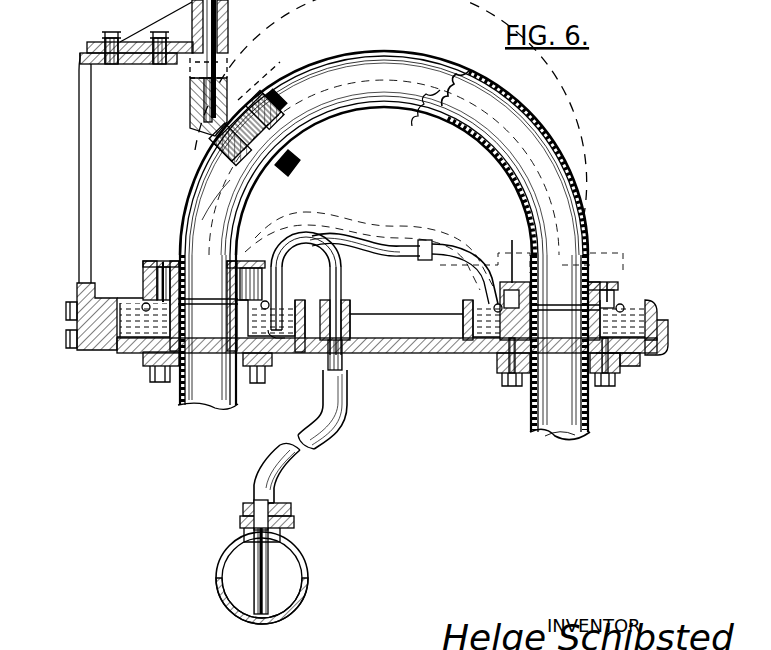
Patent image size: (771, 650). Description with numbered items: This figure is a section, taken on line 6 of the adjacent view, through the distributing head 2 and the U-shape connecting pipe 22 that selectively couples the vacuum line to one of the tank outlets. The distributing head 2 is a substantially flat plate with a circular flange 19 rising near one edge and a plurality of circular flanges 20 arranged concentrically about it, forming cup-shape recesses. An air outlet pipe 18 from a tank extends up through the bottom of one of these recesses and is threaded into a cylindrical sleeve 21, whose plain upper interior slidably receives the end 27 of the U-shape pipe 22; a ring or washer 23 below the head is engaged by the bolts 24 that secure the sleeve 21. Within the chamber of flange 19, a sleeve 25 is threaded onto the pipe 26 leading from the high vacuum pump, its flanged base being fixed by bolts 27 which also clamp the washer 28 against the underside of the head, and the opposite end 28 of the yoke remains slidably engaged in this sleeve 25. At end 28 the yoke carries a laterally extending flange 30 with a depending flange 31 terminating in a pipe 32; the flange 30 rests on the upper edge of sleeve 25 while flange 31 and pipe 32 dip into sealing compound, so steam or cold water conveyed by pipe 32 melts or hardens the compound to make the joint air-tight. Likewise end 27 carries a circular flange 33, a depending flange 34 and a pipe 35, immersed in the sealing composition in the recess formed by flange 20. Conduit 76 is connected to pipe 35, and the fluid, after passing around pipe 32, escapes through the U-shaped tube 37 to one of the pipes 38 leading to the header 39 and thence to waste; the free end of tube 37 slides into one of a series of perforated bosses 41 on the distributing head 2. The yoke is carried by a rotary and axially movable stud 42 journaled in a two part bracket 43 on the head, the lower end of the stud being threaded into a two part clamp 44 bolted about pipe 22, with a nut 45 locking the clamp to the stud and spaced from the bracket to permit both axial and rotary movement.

The distributing head 2 is at (410, 345).
The section line 6— 6 is at (391, 107).
The air outlet pipe 18 is at (545, 405).
The circular flange 19 is at (303, 312).
The circular flanges 20 is at (652, 320).
The cylindrical sleeve 21 is at (612, 282).
The U-shape connecting pipe 22 is at (490, 95).
The ring or washer 23 is at (500, 370).
The bolts 24 is at (513, 382).
The sleeve 25 is at (142, 276).
The pipe 26 is at (195, 392).
The end of U-shape pipe 27 is at (565, 232).
The end of U-shape pipe 28 is at (210, 200).
The laterally extending flange 30 is at (250, 268).
The depending flange 31 is at (145, 270).
The pipe 32 is at (106, 350).
The laterally extending circular flange 33 is at (496, 279).
The circular depending flange 34 is at (625, 298).
The pipe 35 is at (645, 335).
The U-shaped tube 37 is at (310, 240).
The pipes 38 is at (300, 460).
The header 39 is at (292, 590).
The perforated bosses 41 is at (352, 330).
The stud 42 is at (228, 22).
The two part bracket 43 is at (132, 60).
The two part clamp 44 is at (275, 130).
The nut 45 is at (192, 82).
The conduit 76 is at (412, 245).